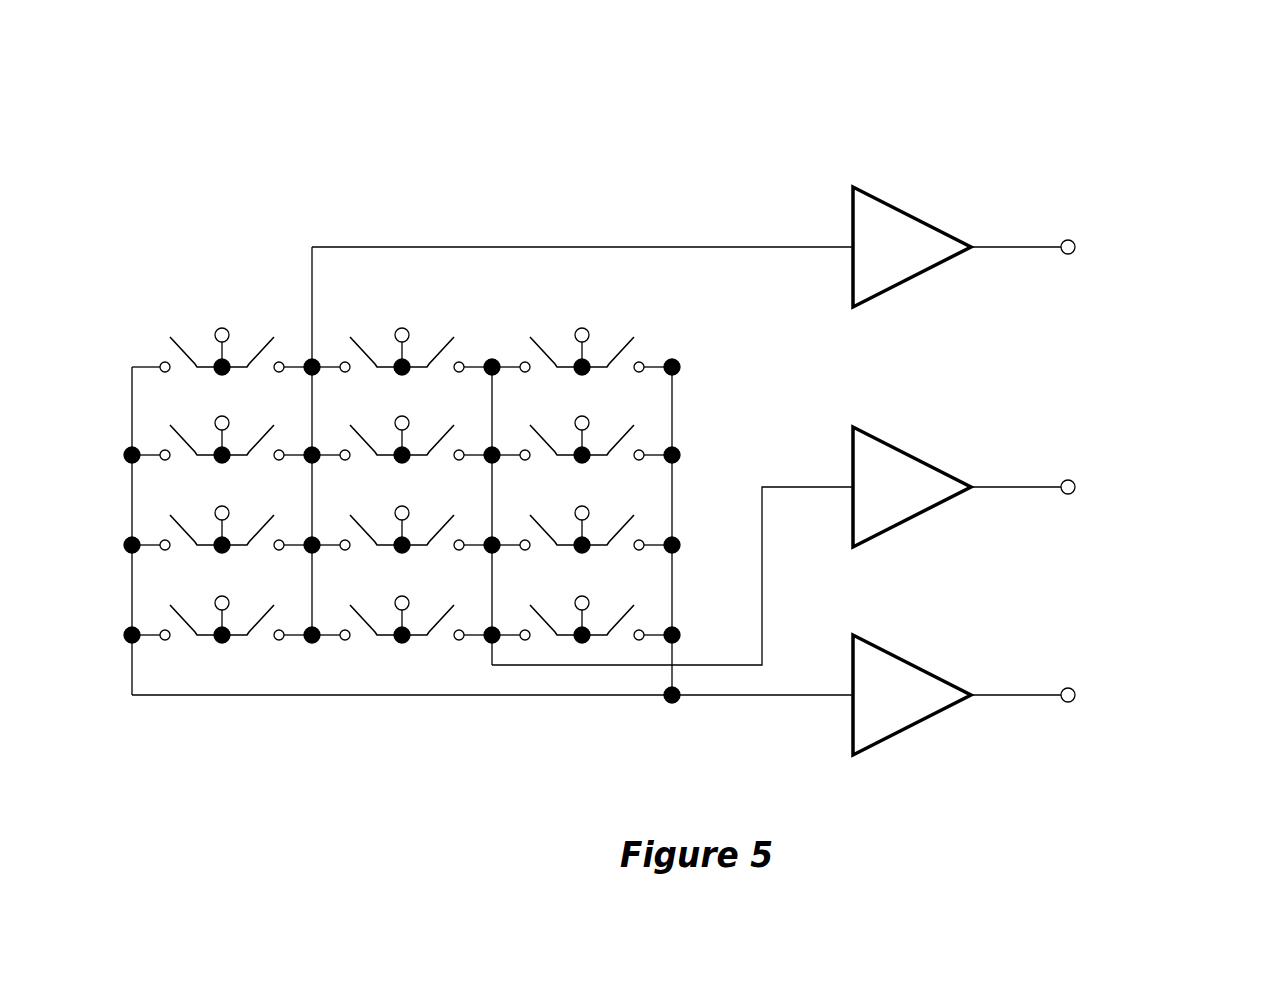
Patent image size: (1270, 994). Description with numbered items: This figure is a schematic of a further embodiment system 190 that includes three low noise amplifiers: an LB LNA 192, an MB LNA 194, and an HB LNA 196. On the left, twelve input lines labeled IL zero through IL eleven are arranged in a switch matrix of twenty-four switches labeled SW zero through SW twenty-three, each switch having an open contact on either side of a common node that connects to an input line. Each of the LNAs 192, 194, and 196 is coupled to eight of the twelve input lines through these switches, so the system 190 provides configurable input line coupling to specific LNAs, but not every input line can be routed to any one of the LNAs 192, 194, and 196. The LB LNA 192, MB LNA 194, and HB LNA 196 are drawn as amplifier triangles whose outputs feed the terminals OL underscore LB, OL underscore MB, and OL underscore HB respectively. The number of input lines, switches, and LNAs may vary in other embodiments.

The system 190 is at (1178, 141).
The LB LNA 192 is at (928, 221).
The MB LNA 194 is at (928, 461).
The HB LNA 196 is at (928, 666).